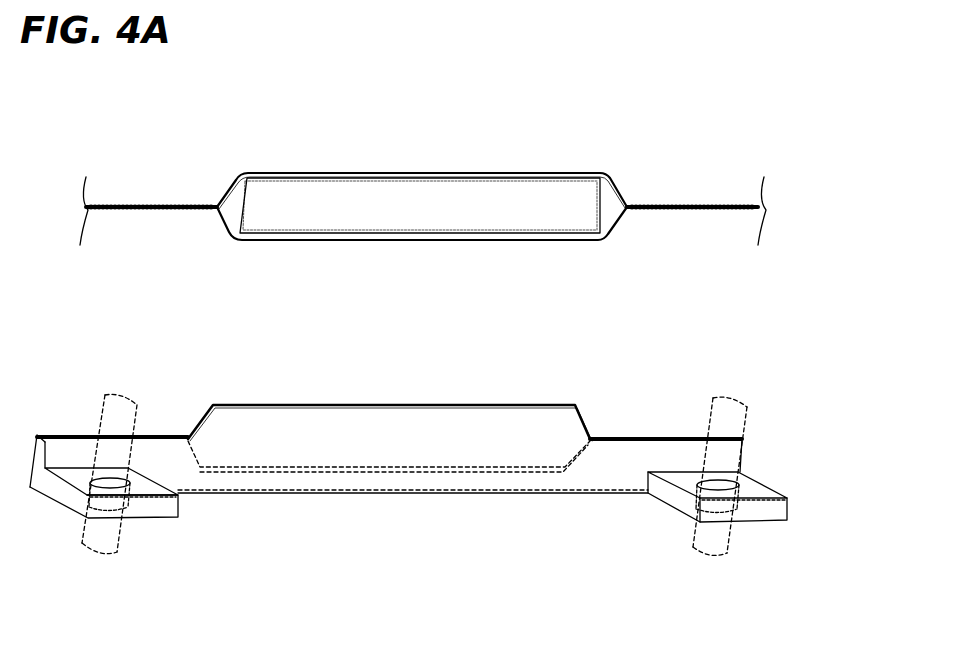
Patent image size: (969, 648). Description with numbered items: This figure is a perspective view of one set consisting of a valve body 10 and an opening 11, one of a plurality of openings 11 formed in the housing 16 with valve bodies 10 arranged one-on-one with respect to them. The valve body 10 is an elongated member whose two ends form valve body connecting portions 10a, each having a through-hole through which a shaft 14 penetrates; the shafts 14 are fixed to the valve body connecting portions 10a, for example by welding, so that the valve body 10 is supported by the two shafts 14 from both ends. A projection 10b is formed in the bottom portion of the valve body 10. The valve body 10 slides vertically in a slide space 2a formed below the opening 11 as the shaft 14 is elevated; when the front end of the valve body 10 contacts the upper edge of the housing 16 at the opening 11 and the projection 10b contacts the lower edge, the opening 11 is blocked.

The housing 16 is at (603, 138).
The opening 11 is at (445, 188).
The slide space 2a is at (676, 208).
The valve body 10 is at (527, 406).
The valve body connecting portion 10a is at (52, 505).
The projection 10b is at (392, 468).
The shaft 14 is at (137, 415).